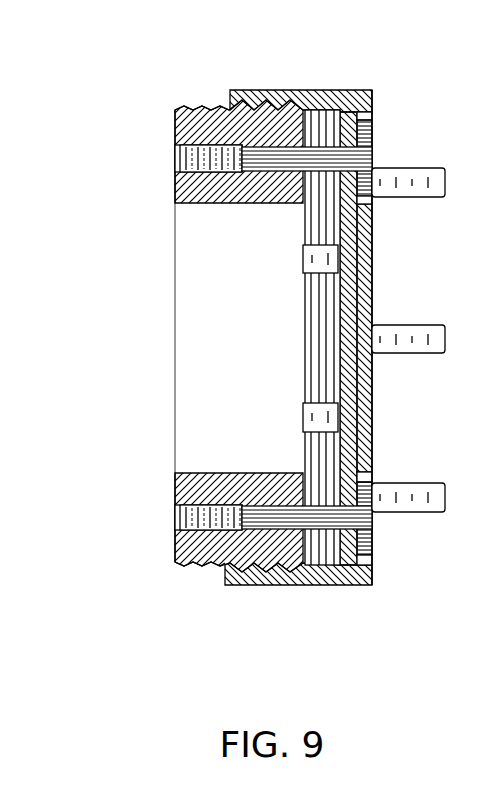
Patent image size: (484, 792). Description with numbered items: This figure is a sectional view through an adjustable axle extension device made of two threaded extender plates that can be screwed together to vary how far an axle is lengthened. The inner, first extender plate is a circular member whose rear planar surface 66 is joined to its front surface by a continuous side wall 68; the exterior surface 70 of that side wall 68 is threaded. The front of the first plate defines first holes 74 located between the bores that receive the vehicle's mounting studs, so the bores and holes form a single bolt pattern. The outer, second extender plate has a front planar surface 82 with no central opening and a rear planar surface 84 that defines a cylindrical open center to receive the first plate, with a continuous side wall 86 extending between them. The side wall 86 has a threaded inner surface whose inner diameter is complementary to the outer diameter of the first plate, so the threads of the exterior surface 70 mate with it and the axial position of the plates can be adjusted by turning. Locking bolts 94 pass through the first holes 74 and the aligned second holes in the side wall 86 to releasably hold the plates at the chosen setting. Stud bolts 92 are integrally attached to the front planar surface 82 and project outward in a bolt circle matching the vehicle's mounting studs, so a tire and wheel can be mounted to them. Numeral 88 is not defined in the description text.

The rear planar surface 66 is at (175, 130).
The side wall 68 is at (175, 110).
The exterior surface 70 is at (197, 107).
The first holes 74 is at (185, 166).
The front planar surface 82 is at (372, 269).
The rear planar surface 84 is at (230, 106).
The side wall 86 is at (297, 90).
The spring strip stack 88 is at (332, 110).
The stud bolts 92 is at (410, 167).
The locking bolts 94 is at (298, 172).